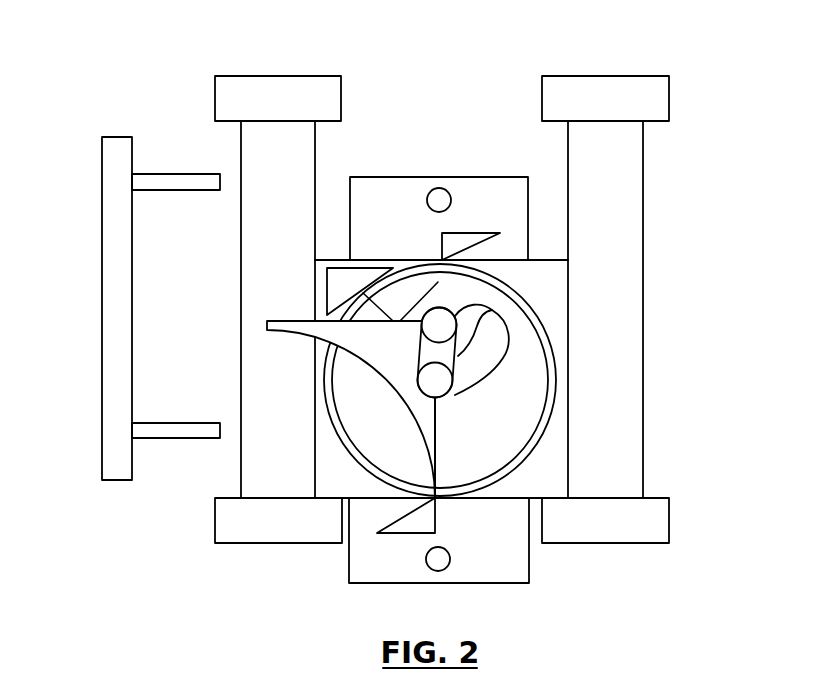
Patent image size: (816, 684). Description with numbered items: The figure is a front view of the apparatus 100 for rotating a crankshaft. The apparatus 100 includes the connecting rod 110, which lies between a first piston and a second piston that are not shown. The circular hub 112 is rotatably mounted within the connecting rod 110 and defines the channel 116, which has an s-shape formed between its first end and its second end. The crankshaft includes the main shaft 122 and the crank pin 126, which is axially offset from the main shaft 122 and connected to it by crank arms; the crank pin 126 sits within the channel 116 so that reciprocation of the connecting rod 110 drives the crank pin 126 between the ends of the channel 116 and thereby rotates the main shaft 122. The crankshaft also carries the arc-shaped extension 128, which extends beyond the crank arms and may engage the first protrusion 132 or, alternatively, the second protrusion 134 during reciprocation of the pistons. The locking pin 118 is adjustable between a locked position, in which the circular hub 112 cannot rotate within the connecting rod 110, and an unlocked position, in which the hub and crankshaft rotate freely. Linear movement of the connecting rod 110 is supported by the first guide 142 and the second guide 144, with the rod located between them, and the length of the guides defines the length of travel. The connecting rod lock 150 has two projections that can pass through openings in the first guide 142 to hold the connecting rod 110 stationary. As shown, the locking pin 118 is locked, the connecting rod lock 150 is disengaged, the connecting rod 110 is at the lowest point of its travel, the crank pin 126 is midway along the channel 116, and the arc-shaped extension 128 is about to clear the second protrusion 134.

The apparatus 100 is at (383, 338).
The connecting rod 110 is at (570, 460).
The circular hub 112 is at (517, 393).
The channel 116 is at (490, 347).
The locking pin 118 is at (357, 285).
The main shaft 122 is at (447, 315).
The crank pin 126 is at (440, 387).
The arc-shaped extension 128 is at (302, 373).
The first protrusion 132 is at (478, 233).
The second protrusion 134 is at (403, 532).
The first guide 142 is at (265, 250).
The second guide 144 is at (620, 272).
The connecting rod lock 150 is at (100, 207).